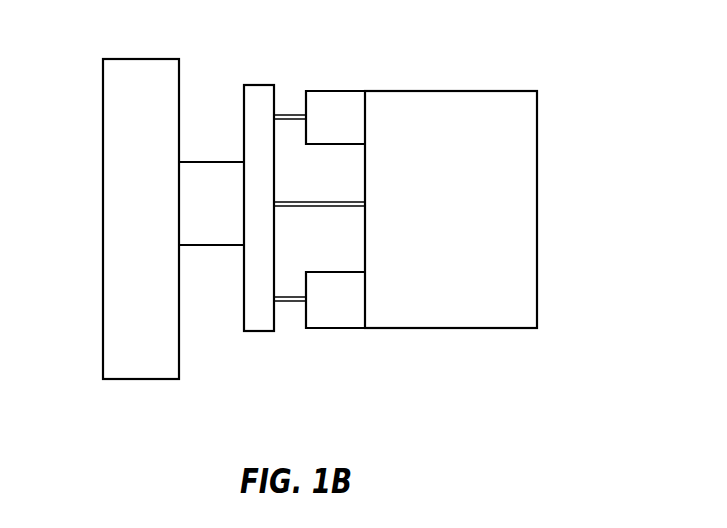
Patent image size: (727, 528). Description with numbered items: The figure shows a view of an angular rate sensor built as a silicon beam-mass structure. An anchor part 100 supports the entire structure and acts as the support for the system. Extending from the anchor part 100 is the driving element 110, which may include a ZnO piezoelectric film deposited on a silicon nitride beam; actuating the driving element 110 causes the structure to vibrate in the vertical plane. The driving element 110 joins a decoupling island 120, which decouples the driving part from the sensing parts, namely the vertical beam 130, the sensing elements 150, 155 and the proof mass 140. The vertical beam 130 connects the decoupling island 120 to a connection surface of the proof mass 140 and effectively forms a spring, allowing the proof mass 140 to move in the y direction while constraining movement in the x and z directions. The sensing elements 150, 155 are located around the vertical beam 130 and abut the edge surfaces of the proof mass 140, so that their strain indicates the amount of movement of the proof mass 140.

The anchor part 100 is at (128, 59).
The driving element 110 is at (198, 162).
The decoupling island 120 is at (255, 85).
The vertical beam 130 is at (343, 202).
The proof mass 140 is at (537, 210).
The sensing element 150 is at (284, 115).
The sensing element 155 is at (284, 303).